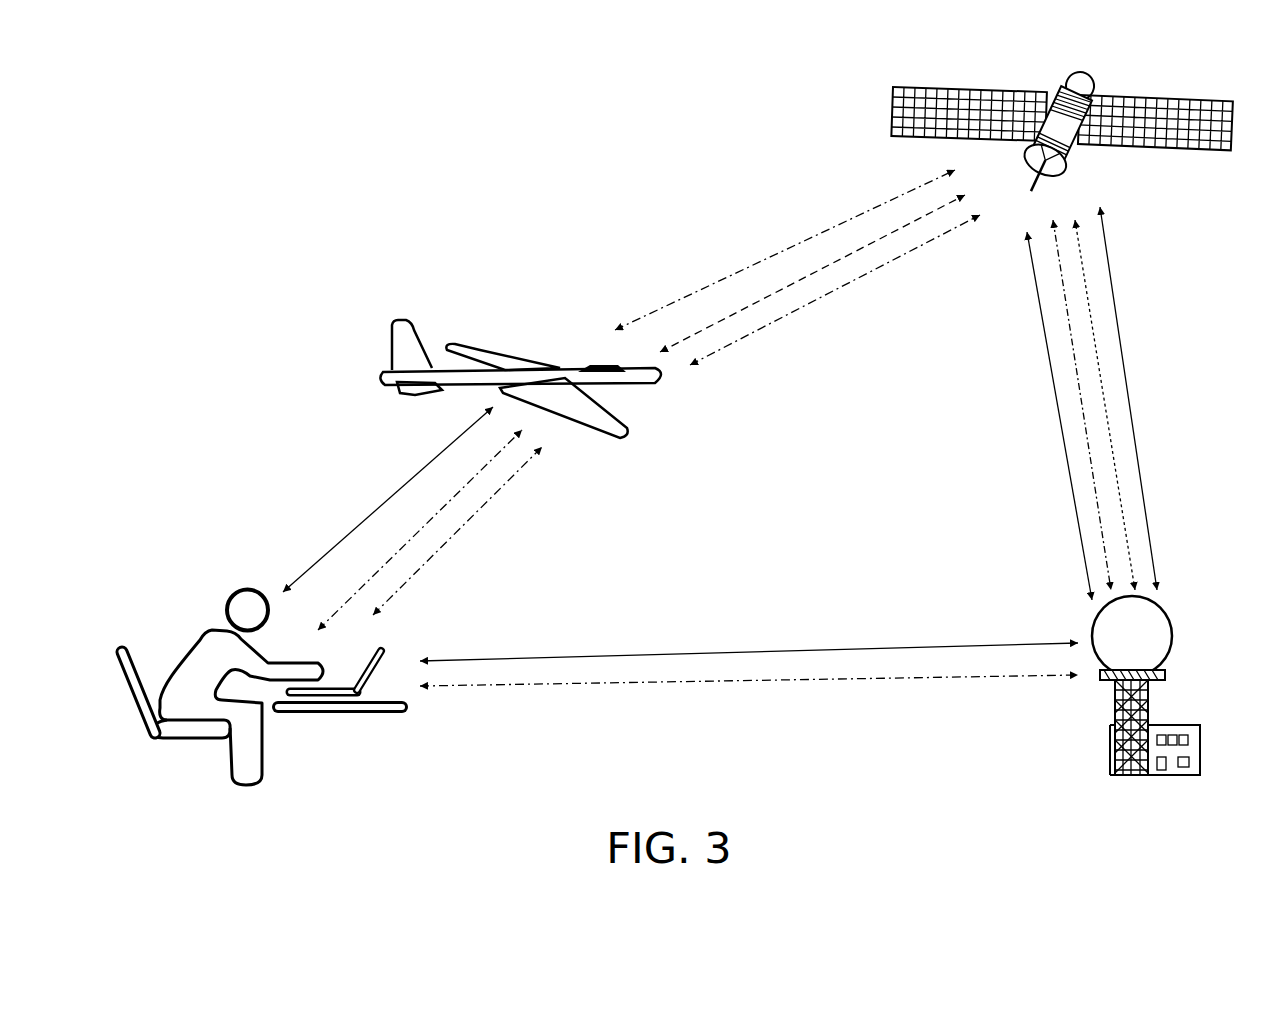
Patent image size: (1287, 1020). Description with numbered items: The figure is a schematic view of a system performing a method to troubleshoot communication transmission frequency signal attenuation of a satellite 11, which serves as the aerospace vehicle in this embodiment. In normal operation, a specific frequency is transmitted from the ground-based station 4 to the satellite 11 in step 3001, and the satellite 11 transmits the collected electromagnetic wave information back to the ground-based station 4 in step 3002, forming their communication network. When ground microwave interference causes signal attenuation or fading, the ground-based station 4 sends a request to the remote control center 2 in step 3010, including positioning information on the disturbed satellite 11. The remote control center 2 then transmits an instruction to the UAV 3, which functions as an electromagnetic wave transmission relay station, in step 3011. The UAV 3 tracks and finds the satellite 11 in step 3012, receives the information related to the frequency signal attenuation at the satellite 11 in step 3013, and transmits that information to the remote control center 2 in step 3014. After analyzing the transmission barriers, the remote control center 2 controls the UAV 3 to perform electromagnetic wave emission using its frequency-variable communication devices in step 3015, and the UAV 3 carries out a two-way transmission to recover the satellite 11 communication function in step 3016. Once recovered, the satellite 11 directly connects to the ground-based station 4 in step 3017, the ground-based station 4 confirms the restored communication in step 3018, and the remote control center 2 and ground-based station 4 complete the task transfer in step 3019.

The satellite 11 is at (1228, 93).
The UAV 3 is at (410, 337).
The remote control center 2 is at (380, 654).
The ground-based station 4 is at (1190, 725).
The step of performing recovering process on satellite 3016 is at (693, 287).
The step of receiving frequency signal attenuation information 3013 is at (753, 303).
The step of tracking and finding satellite 3012 is at (782, 317).
The step of confirming restored communication 3018 is at (1050, 372).
The step of transmitting electromagnetic wave information to ground-based station 3002 is at (1067, 317).
The step of transmitting specific frequency to satellite 3001 is at (1100, 372).
The step of directly connecting satellite to ground-based station 3017 is at (1113, 270).
The step of controlling UAV to emit electromagnetic waves 3015 is at (348, 527).
The step of transmitting attenuation information to remote control center 3014 is at (377, 563).
The step of transmitting instruction to UAV 3011 is at (447, 557).
The step of sending recovery request to remote control center 3010 is at (749, 641).
The step of completing task transfer 3019 is at (749, 691).